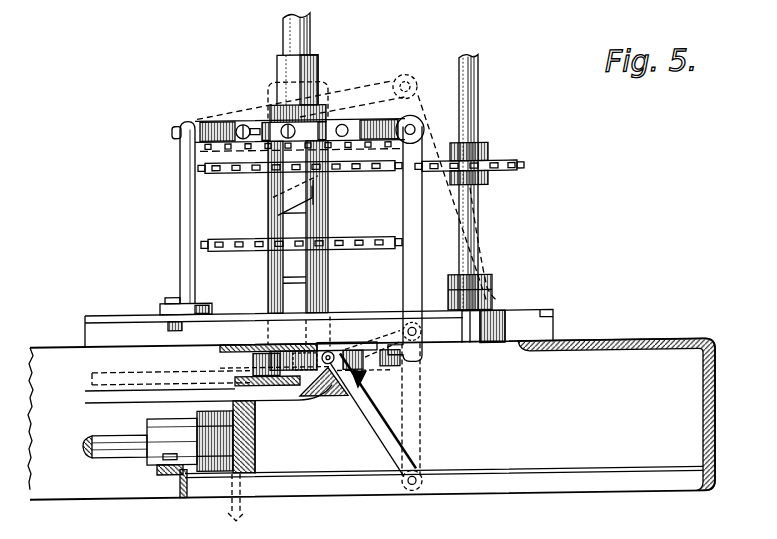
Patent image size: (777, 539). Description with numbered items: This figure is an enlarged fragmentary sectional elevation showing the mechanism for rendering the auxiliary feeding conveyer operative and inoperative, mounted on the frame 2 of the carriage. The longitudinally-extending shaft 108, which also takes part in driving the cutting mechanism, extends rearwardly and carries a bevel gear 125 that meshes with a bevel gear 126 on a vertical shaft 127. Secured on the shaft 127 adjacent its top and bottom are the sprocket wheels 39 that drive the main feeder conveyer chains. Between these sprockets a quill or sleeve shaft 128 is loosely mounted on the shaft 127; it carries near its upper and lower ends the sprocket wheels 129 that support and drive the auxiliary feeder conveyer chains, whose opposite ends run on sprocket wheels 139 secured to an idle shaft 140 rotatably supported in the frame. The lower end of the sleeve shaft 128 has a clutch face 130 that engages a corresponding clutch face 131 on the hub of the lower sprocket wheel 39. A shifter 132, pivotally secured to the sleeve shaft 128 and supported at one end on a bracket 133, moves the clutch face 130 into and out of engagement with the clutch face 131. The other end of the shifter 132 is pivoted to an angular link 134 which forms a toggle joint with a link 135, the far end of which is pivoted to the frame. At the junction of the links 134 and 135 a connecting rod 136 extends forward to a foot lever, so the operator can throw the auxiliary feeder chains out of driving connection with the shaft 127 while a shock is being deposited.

The frame 2 is at (560, 344).
The sprocket wheels 39 is at (363, 240).
The longitudinally-extending shaft 108 is at (115, 452).
The bevel gear 125 is at (253, 442).
The bevel gear 126 is at (255, 383).
The vertical shaft 127 is at (310, 40).
The quill or sleeve shaft 128 is at (318, 70).
The sprocket wheels 129 is at (355, 160).
The clutch face 130 is at (310, 200).
The clutch face 131 is at (320, 203).
The shifter 132 is at (236, 122).
The bracket 133 is at (182, 200).
The angular link 134 is at (412, 267).
The link 135 is at (371, 417).
The connecting rod 136 is at (132, 392).
The sprocket wheels 139 is at (505, 160).
The idle shaft 140 is at (475, 102).